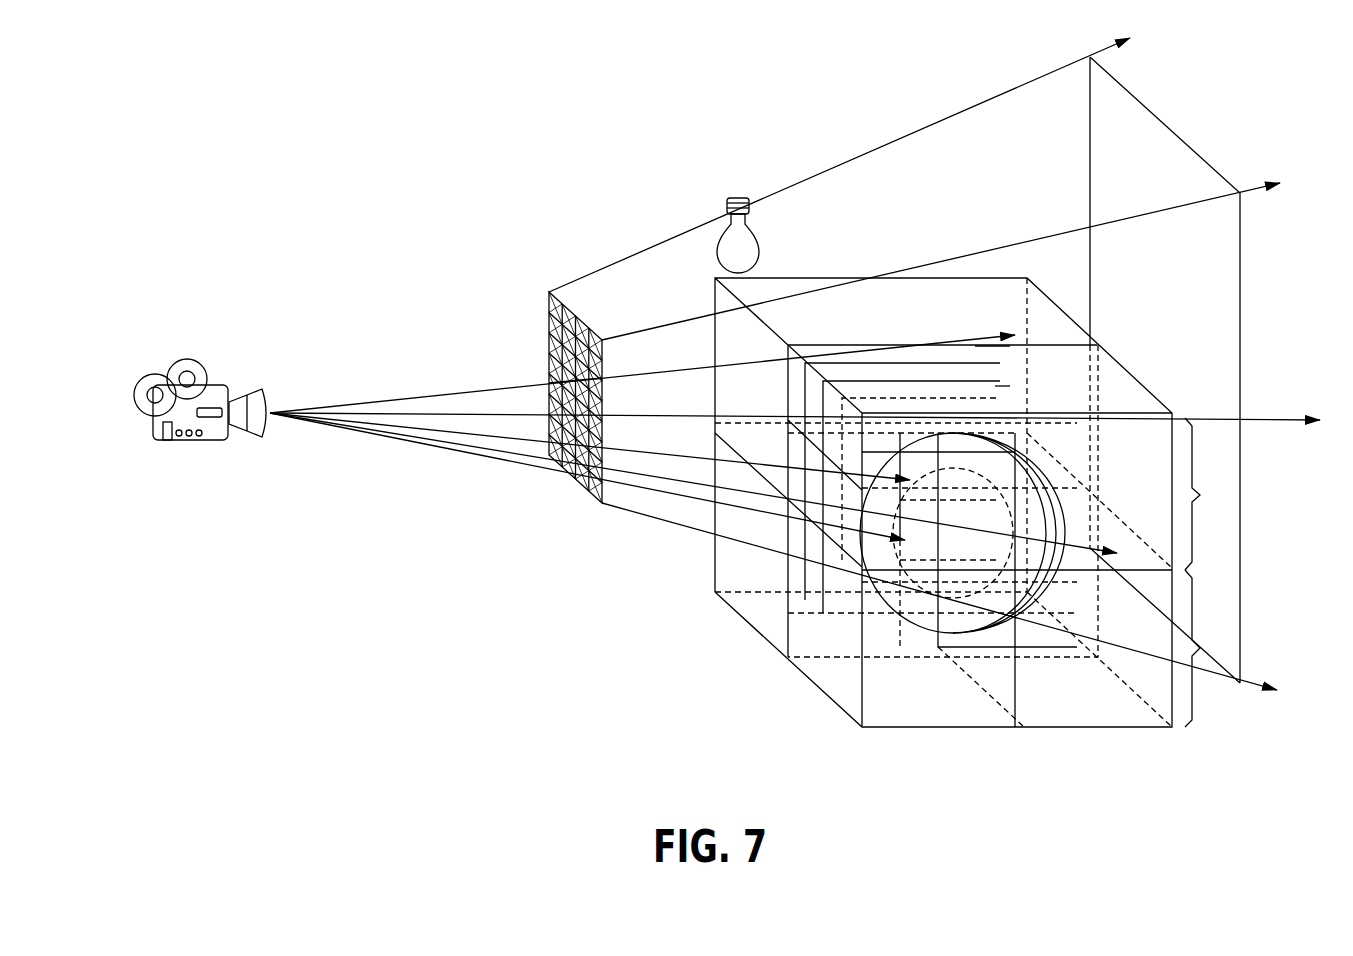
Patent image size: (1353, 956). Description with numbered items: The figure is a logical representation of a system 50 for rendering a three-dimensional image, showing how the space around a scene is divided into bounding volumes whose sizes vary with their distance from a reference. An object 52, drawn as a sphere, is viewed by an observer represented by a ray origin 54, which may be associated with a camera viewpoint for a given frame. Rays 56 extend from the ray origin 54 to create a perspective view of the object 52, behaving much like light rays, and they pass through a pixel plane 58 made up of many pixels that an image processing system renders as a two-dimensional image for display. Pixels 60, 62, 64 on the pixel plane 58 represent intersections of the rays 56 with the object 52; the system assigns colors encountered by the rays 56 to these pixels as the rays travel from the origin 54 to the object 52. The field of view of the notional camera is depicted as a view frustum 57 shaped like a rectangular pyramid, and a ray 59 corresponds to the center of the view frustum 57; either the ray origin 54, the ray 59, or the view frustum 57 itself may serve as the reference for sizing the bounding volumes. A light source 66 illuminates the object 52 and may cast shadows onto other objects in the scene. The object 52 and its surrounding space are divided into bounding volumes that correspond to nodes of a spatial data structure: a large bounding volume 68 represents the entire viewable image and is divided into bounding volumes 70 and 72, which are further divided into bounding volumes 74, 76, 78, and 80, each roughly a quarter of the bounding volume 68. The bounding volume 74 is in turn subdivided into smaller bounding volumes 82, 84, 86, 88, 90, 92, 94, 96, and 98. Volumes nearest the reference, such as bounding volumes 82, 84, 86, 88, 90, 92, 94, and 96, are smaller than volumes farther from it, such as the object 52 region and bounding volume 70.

The system 50 is at (662, 157).
The object 52 is at (885, 625).
The ray origin 54 is at (272, 406).
The rays 56 is at (425, 442).
The view frustum 57 is at (868, 152).
The pixel plane 58 is at (578, 470).
The ray 59 is at (468, 418).
The pixel 60 is at (548, 380).
The pixel 62 is at (545, 383).
The pixel 64 is at (581, 476).
The light source 66 is at (712, 240).
The bounding volume 68 is at (985, 278).
The bounding volume 70 is at (1206, 648).
The bounding volume 72 is at (1206, 494).
The bounding volume 74 is at (905, 332).
The bounding volume 76 is at (806, 288).
The bounding volume 78 is at (935, 292).
The bounding volume 80 is at (1072, 372).
The bounding volume 82 is at (795, 370).
The bounding volume 84 is at (830, 367).
The bounding volume 86 is at (790, 386).
The bounding volume 88 is at (852, 367).
The bounding volume 90 is at (862, 345).
The bounding volume 92 is at (925, 348).
The bounding volume 94 is at (975, 346).
The bounding volume 96 is at (995, 386).
The bounding volume 98 is at (810, 418).